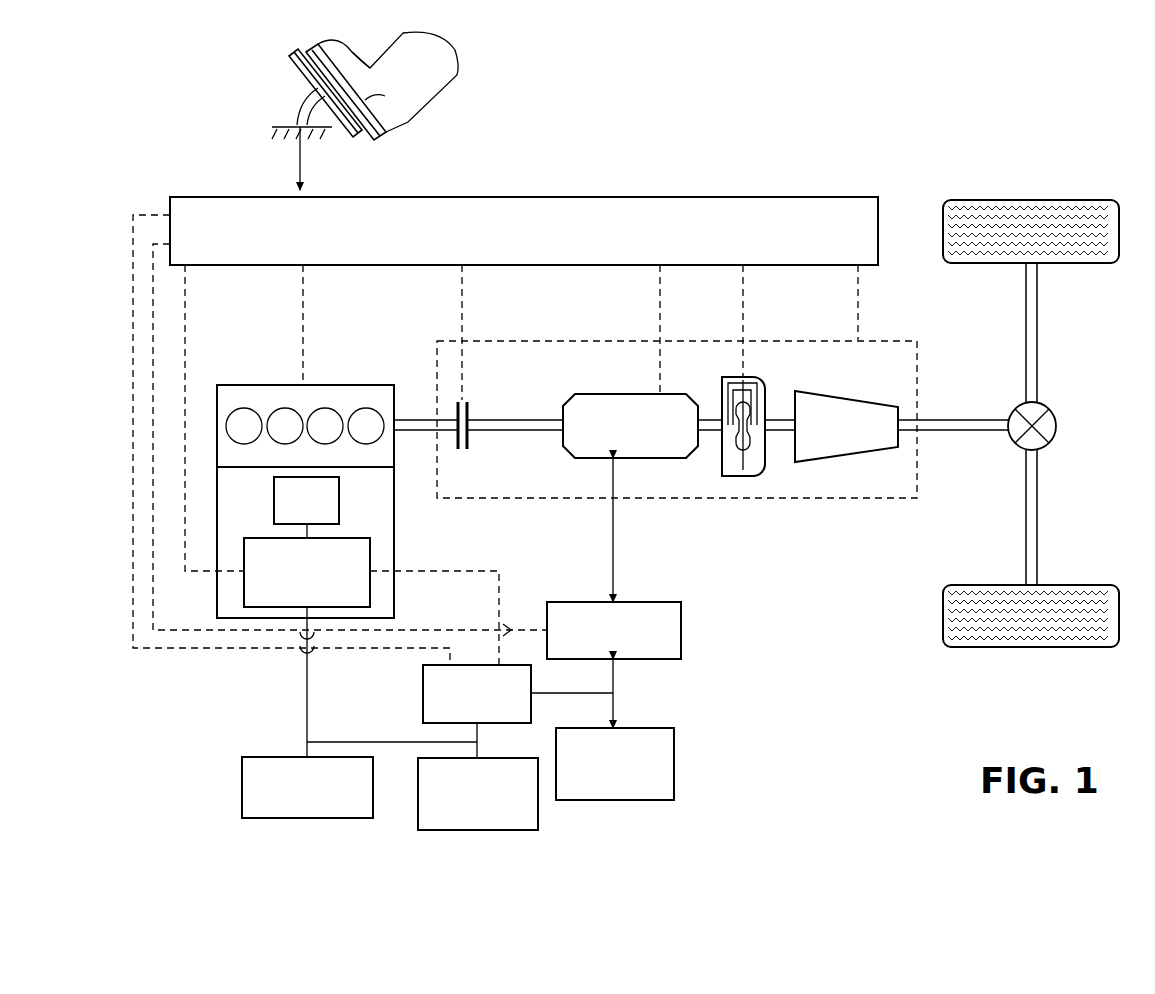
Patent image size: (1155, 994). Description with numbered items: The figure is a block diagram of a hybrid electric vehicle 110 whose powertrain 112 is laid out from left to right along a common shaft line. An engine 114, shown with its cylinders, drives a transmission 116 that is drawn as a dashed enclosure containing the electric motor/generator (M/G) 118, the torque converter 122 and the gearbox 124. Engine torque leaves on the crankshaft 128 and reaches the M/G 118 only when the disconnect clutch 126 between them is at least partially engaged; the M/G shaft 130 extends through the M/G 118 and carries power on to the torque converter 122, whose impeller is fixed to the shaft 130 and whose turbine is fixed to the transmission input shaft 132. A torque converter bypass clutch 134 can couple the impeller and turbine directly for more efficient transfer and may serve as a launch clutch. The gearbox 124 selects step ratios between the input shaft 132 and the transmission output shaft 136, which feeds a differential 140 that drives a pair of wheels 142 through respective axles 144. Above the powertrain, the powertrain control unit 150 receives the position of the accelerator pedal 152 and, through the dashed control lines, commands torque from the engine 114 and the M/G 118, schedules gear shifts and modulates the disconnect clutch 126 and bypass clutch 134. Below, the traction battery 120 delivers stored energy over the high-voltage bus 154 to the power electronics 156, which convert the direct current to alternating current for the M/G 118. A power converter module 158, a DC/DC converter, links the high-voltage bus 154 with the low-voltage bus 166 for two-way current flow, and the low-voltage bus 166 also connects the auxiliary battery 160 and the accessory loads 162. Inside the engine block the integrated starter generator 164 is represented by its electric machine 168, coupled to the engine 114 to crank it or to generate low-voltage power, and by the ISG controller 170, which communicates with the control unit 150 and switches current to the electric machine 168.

The hybrid electric vehicle 110 is at (903, 82).
The powertrain 112 is at (830, 652).
The engine 114 is at (265, 385).
The transmission 116 is at (713, 338).
The electric motor/generator (M/G) 118 is at (614, 392).
The traction battery 120 is at (674, 765).
The torque converter 122 is at (742, 476).
The gearbox 124 is at (845, 452).
The disconnect clutch 126 is at (470, 440).
The crankshaft 128 is at (424, 418).
The M/G shaft 130 is at (480, 420).
The transmission input shaft 132 is at (773, 420).
The torque converter bypass clutch 134 is at (748, 385).
The transmission output shaft 136 is at (977, 418).
The differential 140 is at (1058, 428).
The wheels 142 is at (1033, 200).
The axles 144 is at (1040, 333).
The powertrain control unit (PCU) 150 is at (578, 197).
The accelerator pedal 152 is at (325, 90).
The high-voltage bus 154 is at (613, 700).
The power electronics 156 is at (681, 630).
The power converter module 158 is at (420, 693).
The auxiliary battery 160 is at (418, 795).
The accessory loads 162 is at (240, 787).
The integrated starter generator (ISG) 164 is at (394, 545).
The low-voltage bus 166 is at (303, 692).
The electric machine 168 is at (339, 500).
The ISG controller 170 is at (370, 590).